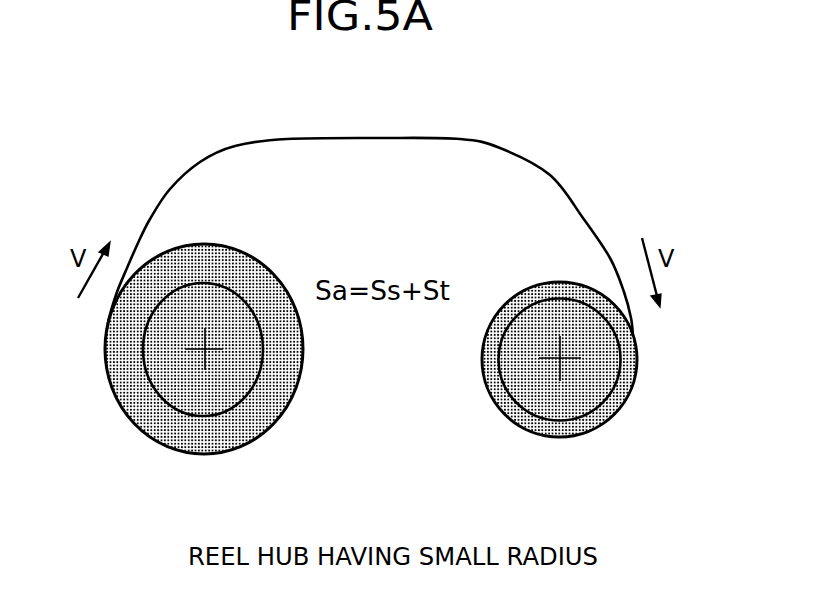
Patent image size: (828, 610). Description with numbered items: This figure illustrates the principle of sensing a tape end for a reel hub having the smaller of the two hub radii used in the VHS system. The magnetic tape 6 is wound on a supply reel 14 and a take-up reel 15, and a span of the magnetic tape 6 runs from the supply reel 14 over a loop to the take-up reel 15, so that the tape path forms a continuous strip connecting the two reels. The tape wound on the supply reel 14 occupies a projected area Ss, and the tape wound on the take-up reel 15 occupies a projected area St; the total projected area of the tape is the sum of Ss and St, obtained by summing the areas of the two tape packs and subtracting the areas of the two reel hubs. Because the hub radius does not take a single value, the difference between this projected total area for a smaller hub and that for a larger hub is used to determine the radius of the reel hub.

The magnetic tape 6 is at (567, 180).
The supply reel 14 is at (221, 344).
The take-up reel 15 is at (552, 362).
The tape contact area on supply reel Ss is at (243, 272).
The tape contact area on take-up reel St is at (527, 307).